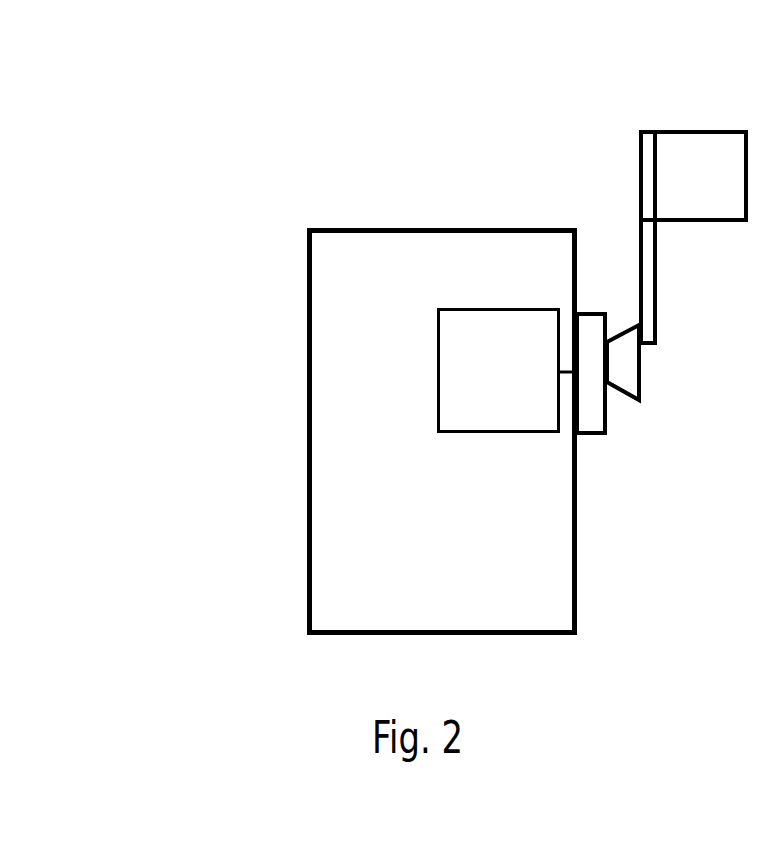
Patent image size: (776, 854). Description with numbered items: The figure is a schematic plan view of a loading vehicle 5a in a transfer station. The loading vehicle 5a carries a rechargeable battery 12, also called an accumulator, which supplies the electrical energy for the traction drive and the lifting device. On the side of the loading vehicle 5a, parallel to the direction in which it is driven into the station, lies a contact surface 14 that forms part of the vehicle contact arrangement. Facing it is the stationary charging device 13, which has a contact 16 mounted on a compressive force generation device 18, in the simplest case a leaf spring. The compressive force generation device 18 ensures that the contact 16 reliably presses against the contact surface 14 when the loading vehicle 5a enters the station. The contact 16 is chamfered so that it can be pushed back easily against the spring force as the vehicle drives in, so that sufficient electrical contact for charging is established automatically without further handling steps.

The loading vehicle 5a is at (334, 588).
The rechargeable battery 12 is at (508, 328).
The charging device 13 is at (718, 147).
The contact surface 14 is at (600, 410).
The contact 16 is at (632, 364).
The compressive force generation device 18 is at (650, 272).